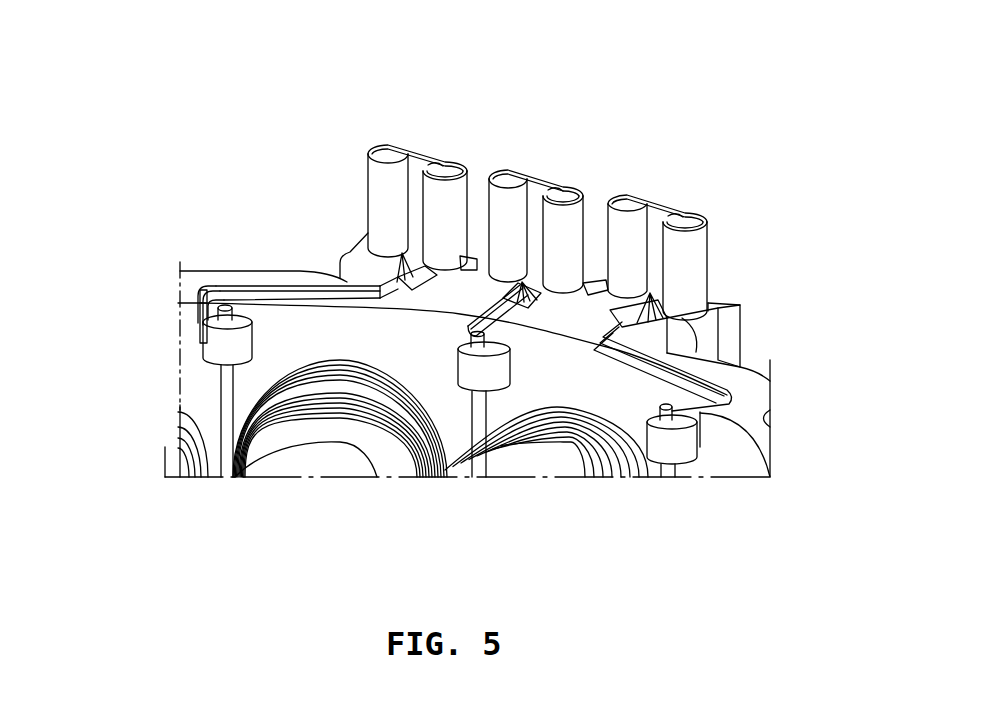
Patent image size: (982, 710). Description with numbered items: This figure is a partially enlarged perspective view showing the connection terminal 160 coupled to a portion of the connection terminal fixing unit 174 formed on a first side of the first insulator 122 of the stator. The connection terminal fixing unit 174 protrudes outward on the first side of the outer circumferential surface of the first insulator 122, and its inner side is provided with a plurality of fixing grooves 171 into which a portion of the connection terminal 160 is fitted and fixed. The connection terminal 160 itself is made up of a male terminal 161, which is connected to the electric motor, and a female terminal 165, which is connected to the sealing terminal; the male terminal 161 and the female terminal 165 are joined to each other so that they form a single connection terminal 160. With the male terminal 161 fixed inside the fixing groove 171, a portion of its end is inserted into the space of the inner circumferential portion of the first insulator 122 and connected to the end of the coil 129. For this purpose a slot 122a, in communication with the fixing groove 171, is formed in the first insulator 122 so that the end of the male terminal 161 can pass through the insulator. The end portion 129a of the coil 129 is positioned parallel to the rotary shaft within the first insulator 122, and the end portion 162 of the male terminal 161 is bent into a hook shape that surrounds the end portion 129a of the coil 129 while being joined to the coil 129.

The first insulator 122 is at (748, 393).
The slot 122a is at (200, 325).
The coil 129 is at (517, 457).
The end portion of the coil 129a is at (227, 422).
The connection terminal 160 is at (384, 122).
The male terminal 161 is at (245, 290).
The end portion of the male terminal 162 is at (246, 343).
The female terminal 165 is at (422, 148).
The fixing groove 171 is at (313, 282).
The connection terminal fixing unit 174 is at (728, 304).